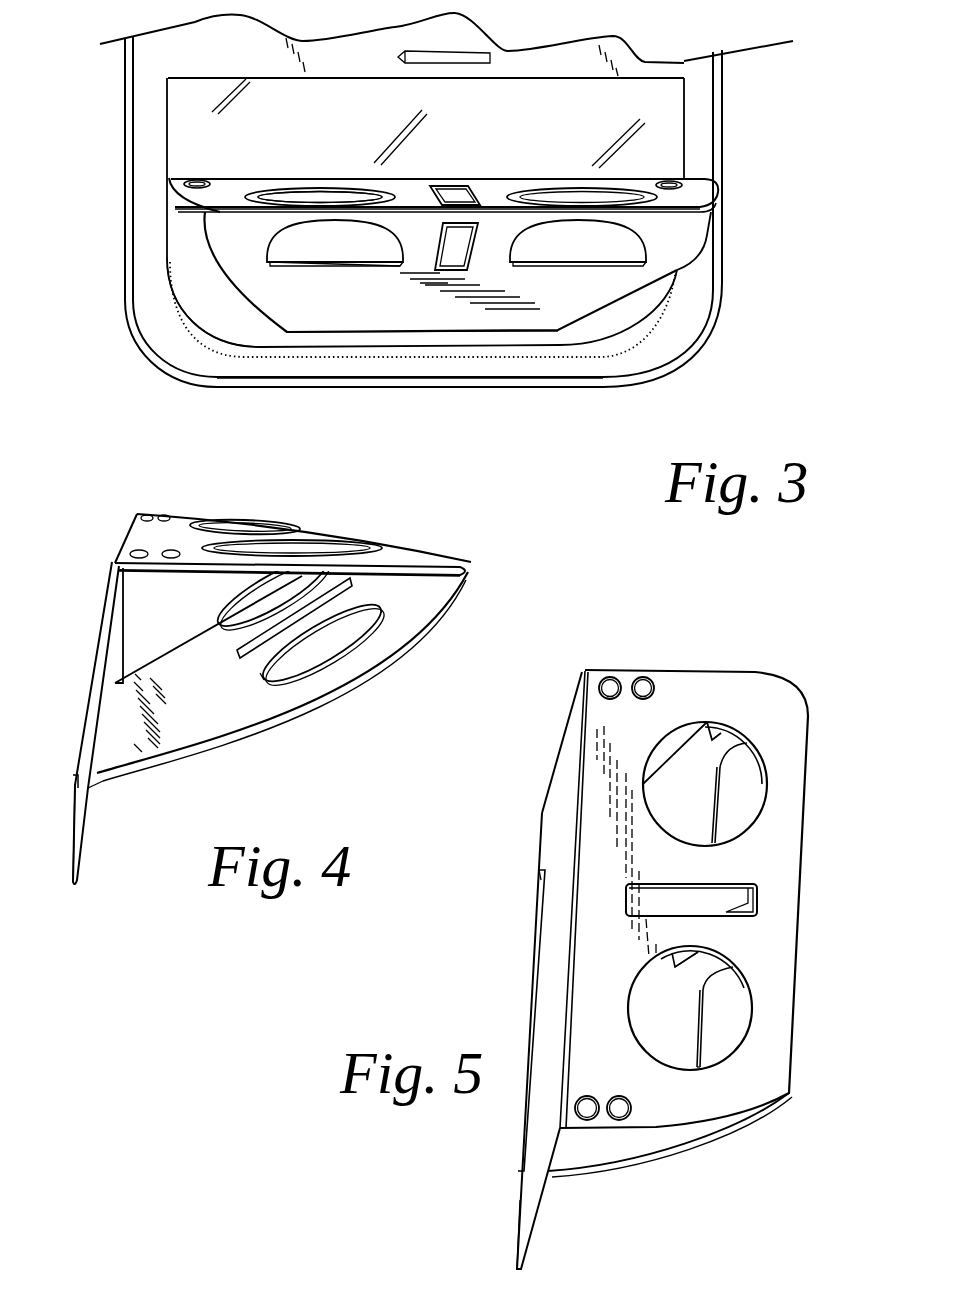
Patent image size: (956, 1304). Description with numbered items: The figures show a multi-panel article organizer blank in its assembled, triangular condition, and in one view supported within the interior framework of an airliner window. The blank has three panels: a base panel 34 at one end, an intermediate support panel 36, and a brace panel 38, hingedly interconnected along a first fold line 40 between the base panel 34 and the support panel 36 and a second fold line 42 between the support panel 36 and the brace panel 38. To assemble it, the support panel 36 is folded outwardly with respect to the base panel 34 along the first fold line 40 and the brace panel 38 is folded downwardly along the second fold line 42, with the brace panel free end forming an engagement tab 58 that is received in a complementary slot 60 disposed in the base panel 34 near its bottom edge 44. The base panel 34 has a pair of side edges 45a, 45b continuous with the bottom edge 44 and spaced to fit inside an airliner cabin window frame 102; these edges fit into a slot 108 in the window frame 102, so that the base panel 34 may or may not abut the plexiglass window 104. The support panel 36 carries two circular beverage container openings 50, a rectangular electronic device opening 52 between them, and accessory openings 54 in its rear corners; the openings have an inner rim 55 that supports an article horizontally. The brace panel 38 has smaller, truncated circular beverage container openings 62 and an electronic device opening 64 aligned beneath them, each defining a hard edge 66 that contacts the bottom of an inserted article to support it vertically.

In FIG. 3, the base panel 34 is at (200, 282).
In FIG. 4, the base panel 34 is at (96, 664).
In FIG. 5, the base panel 34 is at (548, 1138).
In FIG. 3, the intermediate support panel 36 is at (712, 200).
In FIG. 4, the intermediate support panel 36 is at (410, 541).
In FIG. 5, the intermediate support panel 36 is at (585, 1061).
In FIG. 3, the brace panel 38 is at (352, 307).
In FIG. 4, the brace panel 38 is at (246, 743).
In FIG. 5, the brace panel 38 is at (650, 1020).
In FIG. 4, the first fold line 40 is at (118, 562).
In FIG. 5, the first fold line 40 is at (585, 668).
In FIG. 3, the second fold line 42 is at (718, 207).
In FIG. 4, the second fold line 42 is at (471, 573).
In FIG. 3, the base panel bottom edge 44 is at (513, 358).
In FIG. 4, the base panel bottom edge 44 is at (92, 851).
In FIG. 5, the base panel bottom edge 44 is at (515, 1212).
In FIG. 3, the side edge 45a is at (167, 218).
In FIG. 3, the side edge 45b is at (677, 268).
In FIG. 5, the side edge 45b is at (553, 768).
In FIG. 3, the beverage container openings 50 is at (300, 195).
In FIG. 4, the beverage container openings 50 is at (292, 548).
In FIG. 5, the beverage container openings 50 is at (671, 746).
In FIG. 3, the electronic device opening 52 is at (455, 192).
In FIG. 5, the electronic device opening 52 is at (730, 903).
In FIG. 3, the accessory openings 54 is at (199, 180).
In FIG. 4, the accessory openings 54 is at (155, 536).
In FIG. 5, the accessory openings 54 is at (643, 679).
In FIG. 3, the inner rim 55 is at (338, 191).
In FIG. 4, the inner rim 55 is at (244, 524).
In FIG. 5, the inner rim 55 is at (734, 740).
In FIG. 4, the engagement tab 58 is at (75, 783).
In FIG. 5, the engagement tab 58 is at (532, 998).
In FIG. 3, the slot 60 is at (443, 334).
In FIG. 4, the slot 60 is at (96, 786).
In FIG. 3, the beverage container openings 62 is at (322, 253).
In FIG. 4, the beverage container openings 62 is at (232, 600).
In FIG. 5, the beverage container openings 62 is at (744, 818).
In FIG. 3, the electronic device opening 64 is at (445, 253).
In FIG. 4, the electronic device opening 64 is at (238, 653).
In FIG. 5, the electronic device opening 64 is at (698, 952).
In FIG. 3, the hard edge 66 is at (332, 265).
In FIG. 4, the hard edge 66 is at (247, 690).
In FIG. 5, the hard edge 66 is at (700, 1066).
In FIG. 3, the airliner cabin window frame 102 is at (667, 366).
In FIG. 3, the plexiglass window 104 is at (492, 123).
In FIG. 3, the slot 108 is at (560, 350).